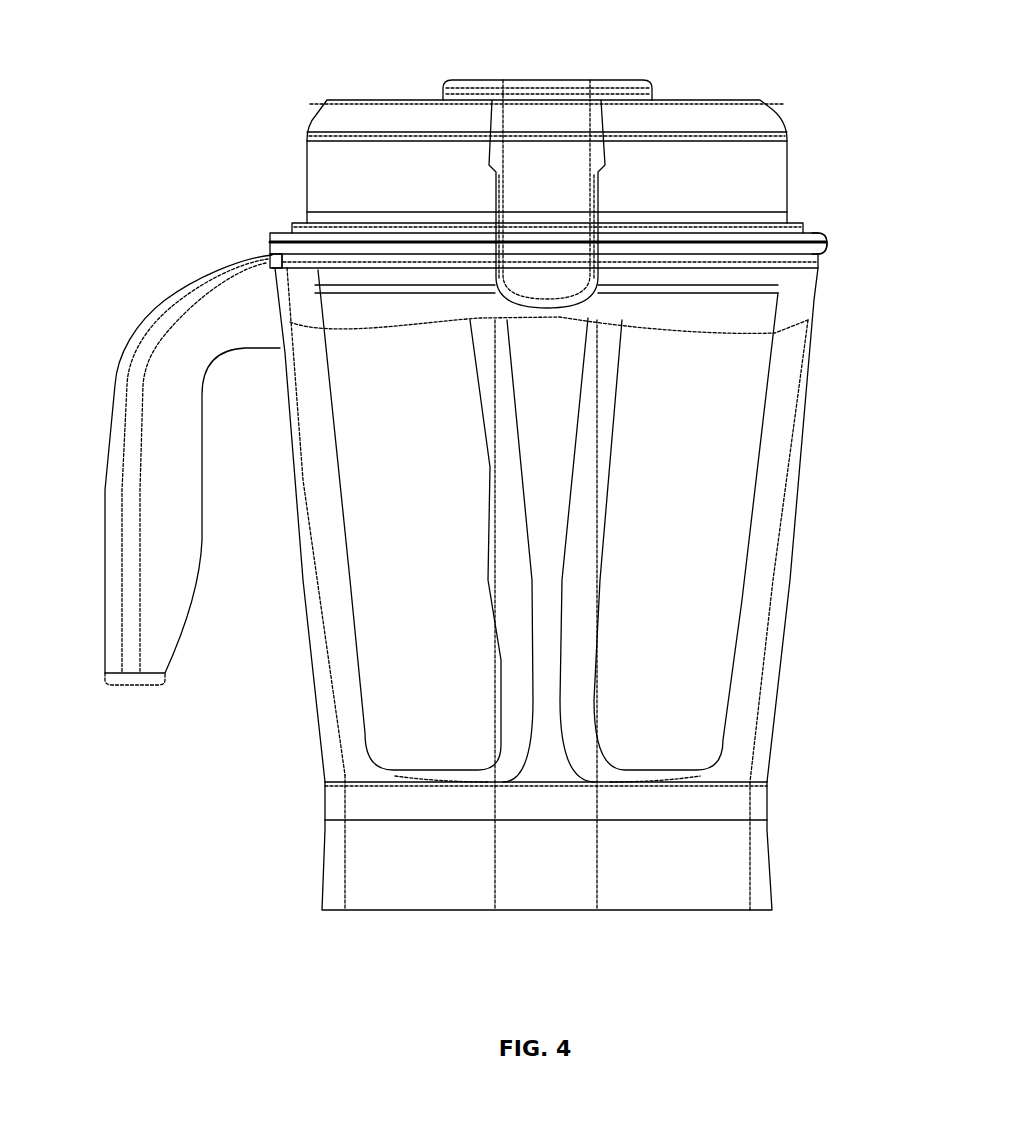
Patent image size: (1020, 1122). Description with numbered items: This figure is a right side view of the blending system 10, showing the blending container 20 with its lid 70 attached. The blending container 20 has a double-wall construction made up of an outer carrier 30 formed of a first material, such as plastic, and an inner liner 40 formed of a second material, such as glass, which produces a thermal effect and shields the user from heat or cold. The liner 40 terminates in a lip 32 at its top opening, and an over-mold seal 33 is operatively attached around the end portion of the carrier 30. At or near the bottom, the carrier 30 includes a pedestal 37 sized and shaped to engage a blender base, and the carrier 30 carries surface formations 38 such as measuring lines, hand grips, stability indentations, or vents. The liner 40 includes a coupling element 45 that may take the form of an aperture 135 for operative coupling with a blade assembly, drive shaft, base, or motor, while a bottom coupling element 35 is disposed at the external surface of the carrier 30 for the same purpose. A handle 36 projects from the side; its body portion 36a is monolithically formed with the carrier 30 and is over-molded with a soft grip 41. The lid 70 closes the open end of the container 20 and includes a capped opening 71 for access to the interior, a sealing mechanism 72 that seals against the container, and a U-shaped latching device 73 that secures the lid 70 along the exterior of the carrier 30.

The blending system 10 is at (810, 60).
The blending container 20 is at (829, 529).
The carrier 30 is at (792, 596).
The lip 32 is at (813, 232).
The over-mold seal 33 is at (830, 245).
The bottom coupling element 35 is at (547, 887).
The handle 36 is at (106, 373).
The body portion 36a is at (186, 545).
The pedestal 37 is at (322, 866).
The surface formations 38 is at (745, 913).
The liner 40 is at (740, 633).
The grip 41 is at (110, 533).
The coupling element 45 is at (567, 808).
The lid 70 is at (309, 110).
The capped opening 71 is at (516, 80).
The sealing mechanism 72 is at (305, 222).
The latching device 73 is at (543, 125).
The aperture 135 is at (529, 823).